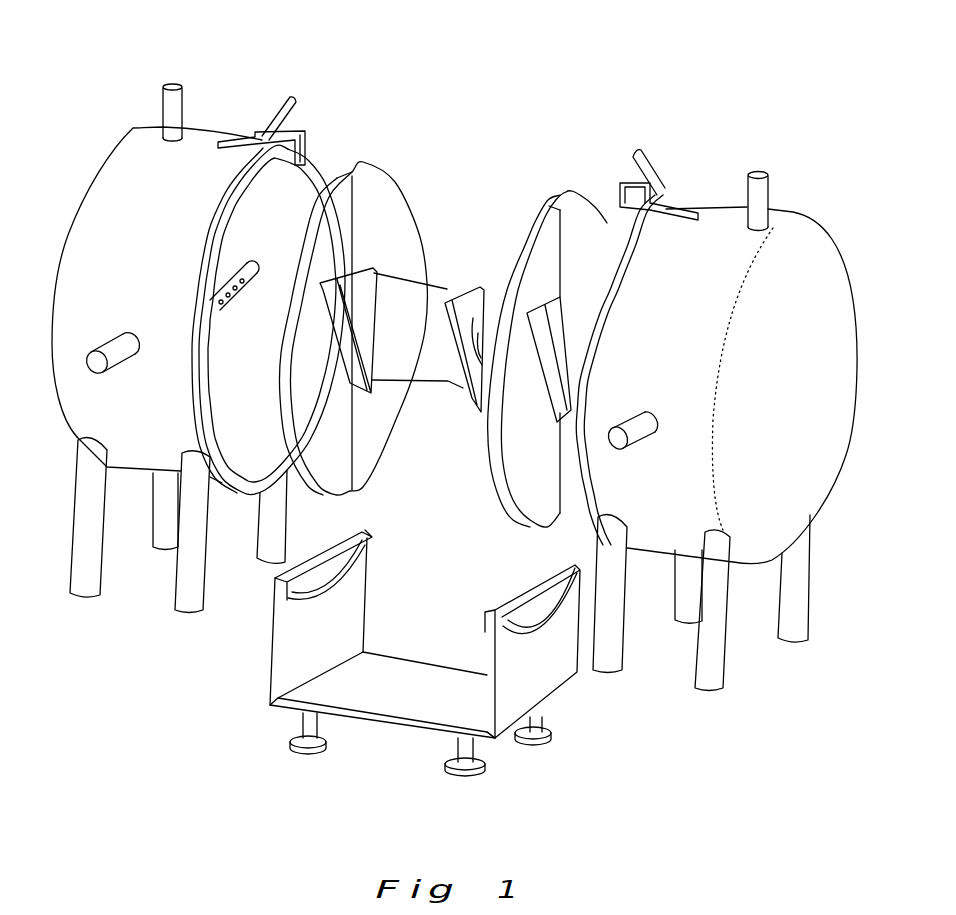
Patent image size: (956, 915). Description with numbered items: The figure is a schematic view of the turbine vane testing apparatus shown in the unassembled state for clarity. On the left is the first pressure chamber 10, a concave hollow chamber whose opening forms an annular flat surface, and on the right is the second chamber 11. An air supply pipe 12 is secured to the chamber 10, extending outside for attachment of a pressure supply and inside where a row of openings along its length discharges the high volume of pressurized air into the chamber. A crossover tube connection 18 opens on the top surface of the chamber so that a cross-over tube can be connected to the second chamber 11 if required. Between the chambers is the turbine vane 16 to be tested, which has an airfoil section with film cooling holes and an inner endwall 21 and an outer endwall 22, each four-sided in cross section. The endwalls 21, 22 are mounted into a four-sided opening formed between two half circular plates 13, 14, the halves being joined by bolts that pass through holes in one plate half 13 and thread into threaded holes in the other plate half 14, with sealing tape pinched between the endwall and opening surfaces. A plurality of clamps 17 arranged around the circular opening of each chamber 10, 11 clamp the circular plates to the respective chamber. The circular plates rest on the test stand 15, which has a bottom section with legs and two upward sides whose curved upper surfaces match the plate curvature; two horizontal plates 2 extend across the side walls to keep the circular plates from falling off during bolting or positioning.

The horizontal plates 2 is at (523, 600).
The first pressure chamber 10 is at (137, 157).
The second chamber 11 is at (777, 237).
The air supply pipe 12 is at (228, 258).
The half circular plate 13 is at (330, 188).
The half circular plate 14 is at (363, 193).
The test stand 15 is at (542, 688).
The turbine vane 16 is at (433, 360).
The clamps 17 is at (267, 110).
The crossover tube connection 18 is at (172, 102).
The inner endwall 21 is at (357, 293).
The outer endwall 22 is at (463, 312).